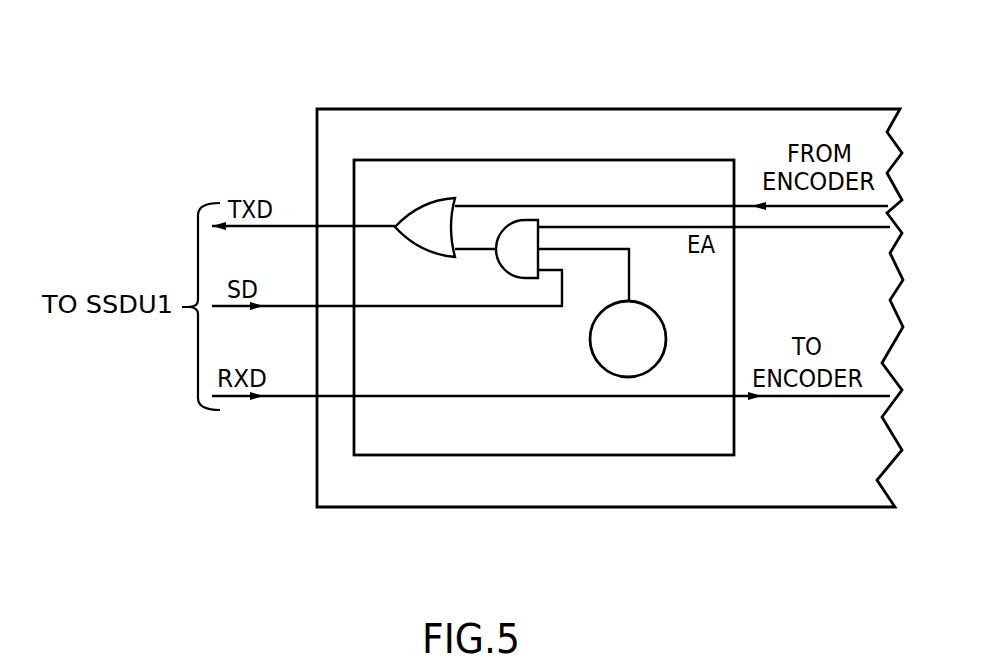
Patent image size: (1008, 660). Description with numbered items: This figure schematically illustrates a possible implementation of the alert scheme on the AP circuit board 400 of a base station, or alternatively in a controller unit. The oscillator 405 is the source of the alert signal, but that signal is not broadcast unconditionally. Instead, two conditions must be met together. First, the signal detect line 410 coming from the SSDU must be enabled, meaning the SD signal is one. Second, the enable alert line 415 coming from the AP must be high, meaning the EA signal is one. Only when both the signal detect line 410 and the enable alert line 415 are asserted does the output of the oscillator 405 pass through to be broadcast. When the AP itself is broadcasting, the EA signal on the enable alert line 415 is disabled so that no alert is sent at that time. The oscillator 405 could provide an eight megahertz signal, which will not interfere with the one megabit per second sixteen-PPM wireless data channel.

The AP circuit board 400 is at (543, 109).
The oscillator 405 is at (592, 347).
The signal detect line 410 is at (365, 308).
The enable alert line 415 is at (763, 228).